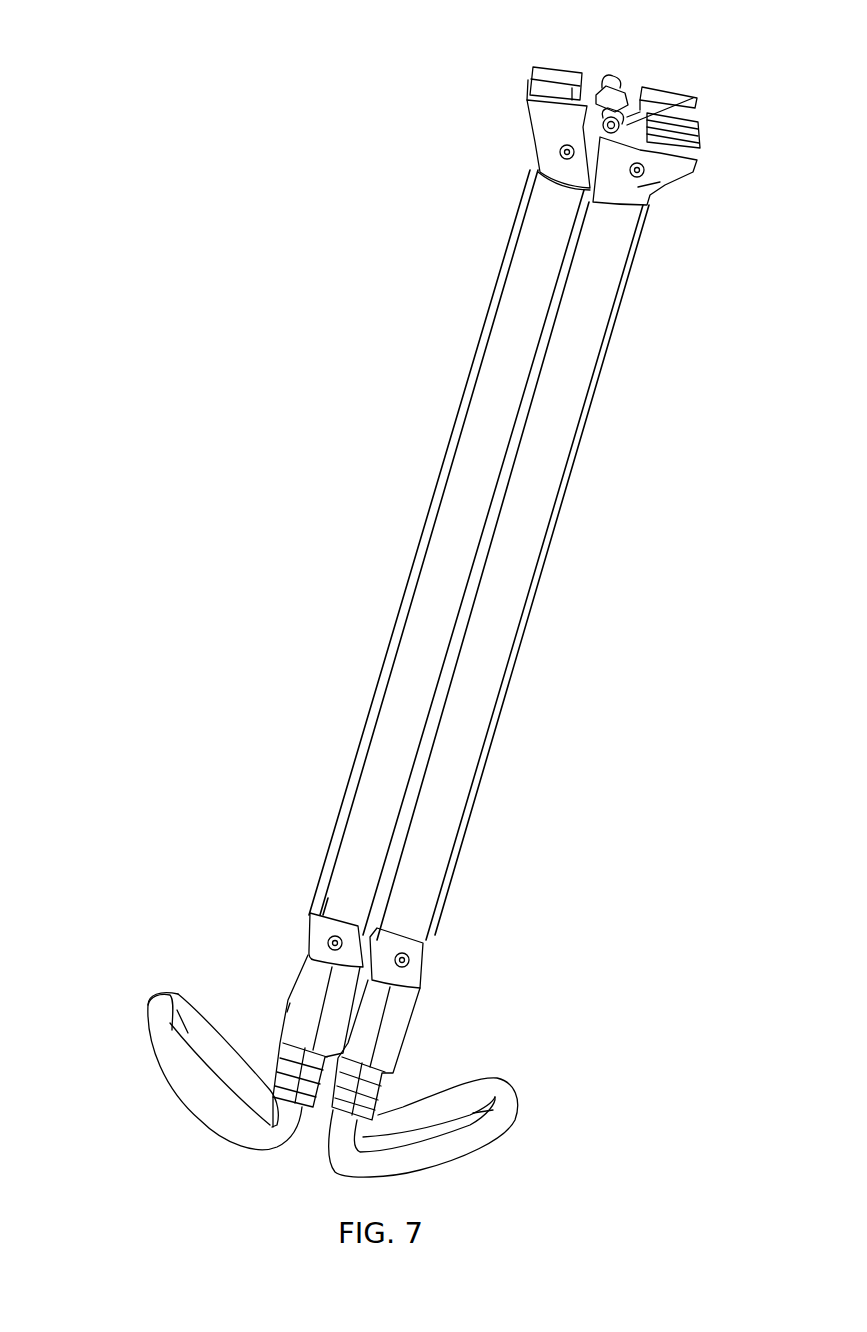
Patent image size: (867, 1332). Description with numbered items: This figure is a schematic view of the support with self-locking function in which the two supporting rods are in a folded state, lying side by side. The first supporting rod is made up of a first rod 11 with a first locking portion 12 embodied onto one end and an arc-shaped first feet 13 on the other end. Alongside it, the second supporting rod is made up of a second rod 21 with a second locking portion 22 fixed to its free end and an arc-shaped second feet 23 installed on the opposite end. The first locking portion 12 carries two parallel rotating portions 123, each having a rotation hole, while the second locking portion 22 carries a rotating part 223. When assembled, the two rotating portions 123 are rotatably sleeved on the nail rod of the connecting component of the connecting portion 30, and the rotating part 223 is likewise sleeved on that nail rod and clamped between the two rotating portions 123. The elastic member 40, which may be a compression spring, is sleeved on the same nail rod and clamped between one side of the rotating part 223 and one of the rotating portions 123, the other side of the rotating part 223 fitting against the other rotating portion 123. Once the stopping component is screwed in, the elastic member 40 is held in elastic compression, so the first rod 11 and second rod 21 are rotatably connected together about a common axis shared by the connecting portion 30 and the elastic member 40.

The first rod 11 is at (520, 528).
The first locking portion 12 is at (688, 157).
The first feet 13 is at (497, 1117).
The second rod 21 is at (480, 453).
The second locking portion 22 is at (553, 167).
The second feet 23 is at (170, 993).
The connecting portion 30 is at (697, 98).
The elastic member 40 is at (630, 104).
The rotating portion 123 is at (607, 80).
The rotating part 223 is at (547, 86).